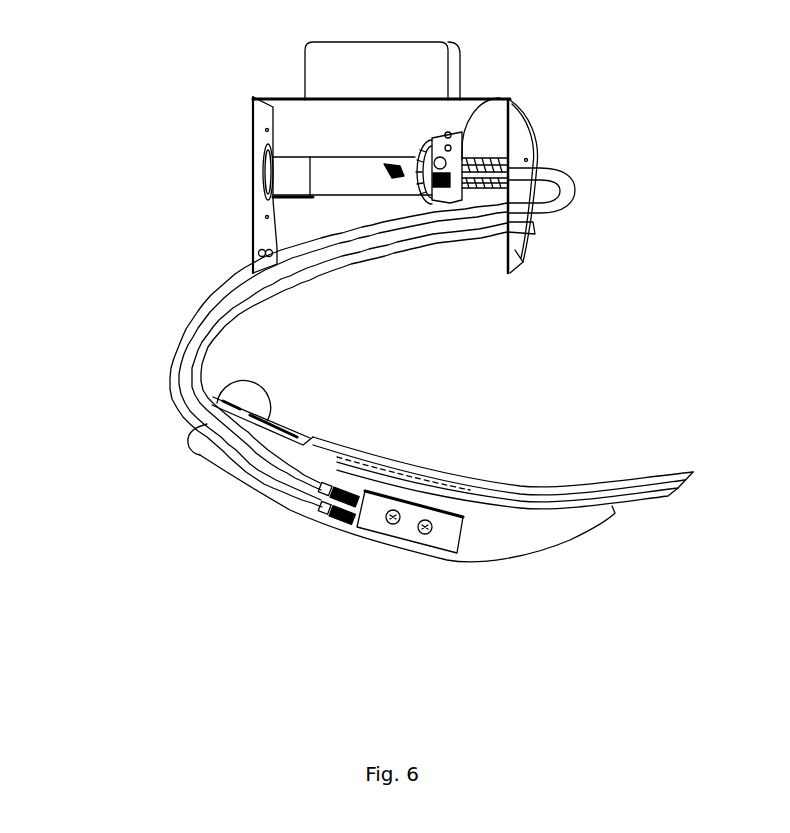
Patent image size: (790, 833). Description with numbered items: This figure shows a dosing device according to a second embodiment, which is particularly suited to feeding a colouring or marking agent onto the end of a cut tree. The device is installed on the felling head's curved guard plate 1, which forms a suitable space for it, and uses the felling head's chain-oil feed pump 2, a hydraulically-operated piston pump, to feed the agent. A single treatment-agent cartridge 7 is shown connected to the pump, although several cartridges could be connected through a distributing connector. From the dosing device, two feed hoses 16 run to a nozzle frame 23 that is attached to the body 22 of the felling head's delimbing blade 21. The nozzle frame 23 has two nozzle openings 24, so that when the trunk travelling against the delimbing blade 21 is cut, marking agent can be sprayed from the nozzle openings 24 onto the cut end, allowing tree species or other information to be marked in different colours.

The guard plate 1 is at (270, 97).
The pump 2 is at (477, 100).
The treatment-agent cartridge 7 is at (288, 186).
The feed hoses 16 is at (266, 300).
The delimbing blade 21 is at (604, 487).
The body 22 is at (552, 532).
The nozzle frame 23 is at (444, 542).
The nozzle openings 24 is at (390, 514).